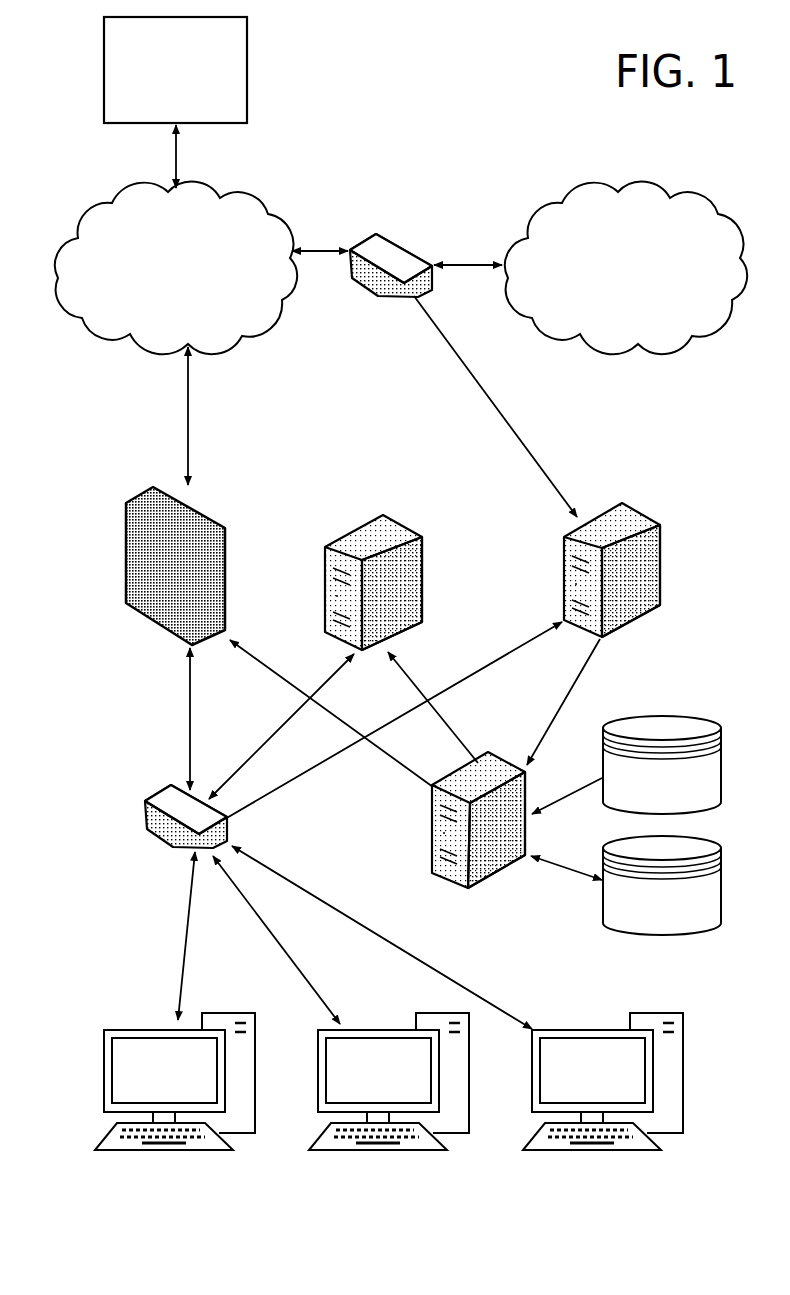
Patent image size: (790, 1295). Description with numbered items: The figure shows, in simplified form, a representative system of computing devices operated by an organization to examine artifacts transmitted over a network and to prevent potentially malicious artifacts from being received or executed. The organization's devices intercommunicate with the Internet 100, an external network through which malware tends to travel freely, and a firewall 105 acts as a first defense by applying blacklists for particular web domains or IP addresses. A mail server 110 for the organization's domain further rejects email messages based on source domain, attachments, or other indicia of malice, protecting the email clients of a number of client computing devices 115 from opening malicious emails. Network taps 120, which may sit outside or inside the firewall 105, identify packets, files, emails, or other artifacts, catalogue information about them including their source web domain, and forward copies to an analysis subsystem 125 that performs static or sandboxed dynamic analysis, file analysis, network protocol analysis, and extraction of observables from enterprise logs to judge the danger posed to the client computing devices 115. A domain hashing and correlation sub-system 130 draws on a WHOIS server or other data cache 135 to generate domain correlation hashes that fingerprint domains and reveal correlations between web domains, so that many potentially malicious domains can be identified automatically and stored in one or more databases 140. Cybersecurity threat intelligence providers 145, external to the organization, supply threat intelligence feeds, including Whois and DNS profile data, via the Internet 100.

The Internet 100 is at (152, 279).
The firewall 105 is at (125, 503).
The mail server 110 is at (362, 527).
The client computing devices 115 is at (238, 1160).
The network taps 120 is at (402, 242).
The analysis subsystem 125 is at (661, 522).
The domain hashing and correlation sub-system 130 is at (500, 873).
The WHOIS server or other data cache 135 is at (639, 794).
The databases 140 is at (639, 914).
The cybersecurity threat intelligence providers 145 is at (152, 84).